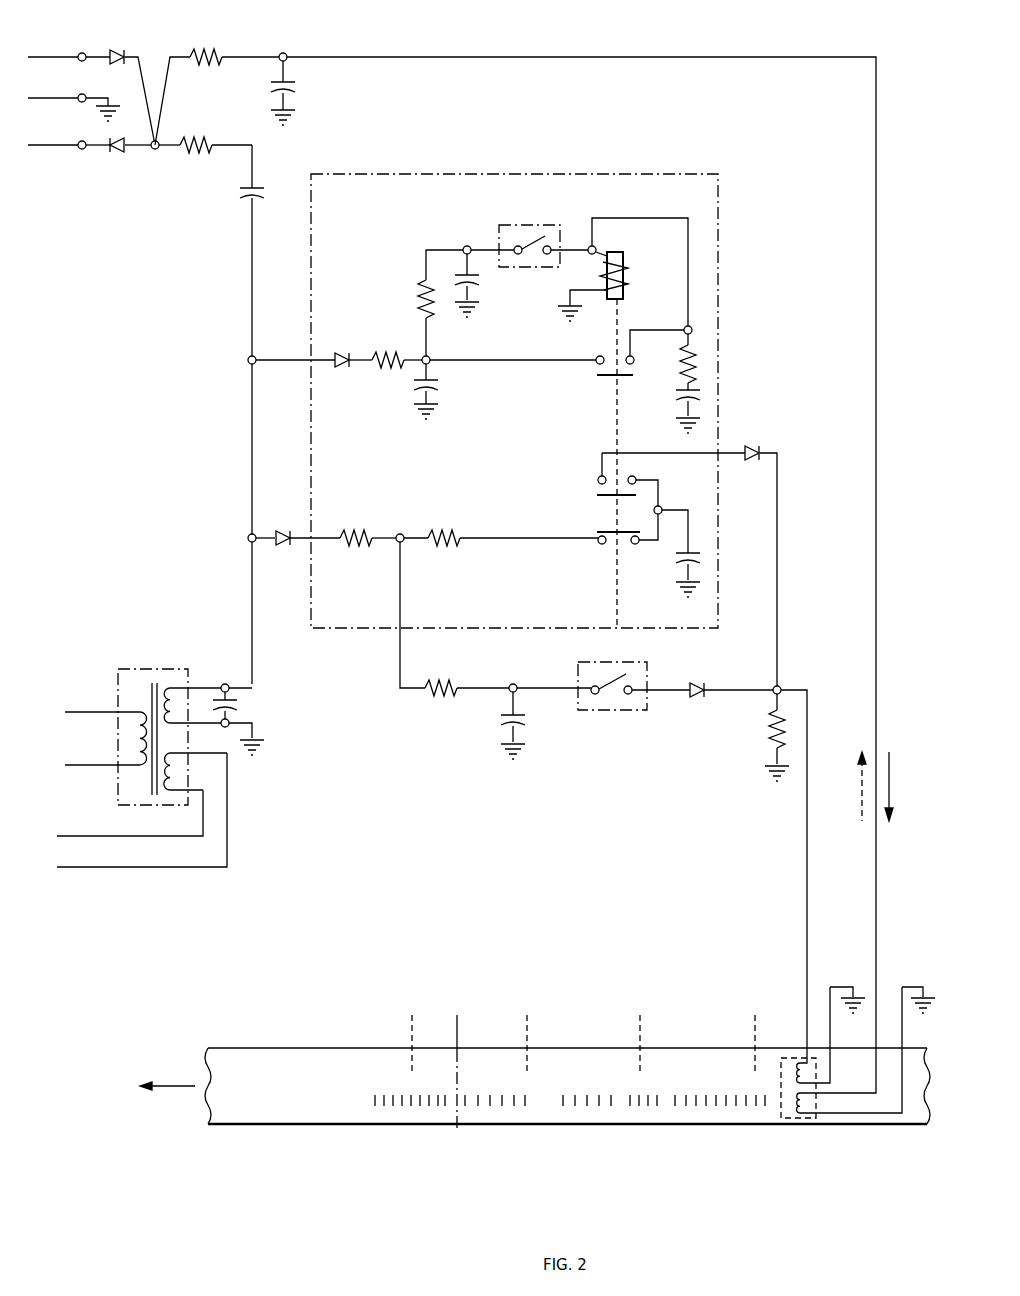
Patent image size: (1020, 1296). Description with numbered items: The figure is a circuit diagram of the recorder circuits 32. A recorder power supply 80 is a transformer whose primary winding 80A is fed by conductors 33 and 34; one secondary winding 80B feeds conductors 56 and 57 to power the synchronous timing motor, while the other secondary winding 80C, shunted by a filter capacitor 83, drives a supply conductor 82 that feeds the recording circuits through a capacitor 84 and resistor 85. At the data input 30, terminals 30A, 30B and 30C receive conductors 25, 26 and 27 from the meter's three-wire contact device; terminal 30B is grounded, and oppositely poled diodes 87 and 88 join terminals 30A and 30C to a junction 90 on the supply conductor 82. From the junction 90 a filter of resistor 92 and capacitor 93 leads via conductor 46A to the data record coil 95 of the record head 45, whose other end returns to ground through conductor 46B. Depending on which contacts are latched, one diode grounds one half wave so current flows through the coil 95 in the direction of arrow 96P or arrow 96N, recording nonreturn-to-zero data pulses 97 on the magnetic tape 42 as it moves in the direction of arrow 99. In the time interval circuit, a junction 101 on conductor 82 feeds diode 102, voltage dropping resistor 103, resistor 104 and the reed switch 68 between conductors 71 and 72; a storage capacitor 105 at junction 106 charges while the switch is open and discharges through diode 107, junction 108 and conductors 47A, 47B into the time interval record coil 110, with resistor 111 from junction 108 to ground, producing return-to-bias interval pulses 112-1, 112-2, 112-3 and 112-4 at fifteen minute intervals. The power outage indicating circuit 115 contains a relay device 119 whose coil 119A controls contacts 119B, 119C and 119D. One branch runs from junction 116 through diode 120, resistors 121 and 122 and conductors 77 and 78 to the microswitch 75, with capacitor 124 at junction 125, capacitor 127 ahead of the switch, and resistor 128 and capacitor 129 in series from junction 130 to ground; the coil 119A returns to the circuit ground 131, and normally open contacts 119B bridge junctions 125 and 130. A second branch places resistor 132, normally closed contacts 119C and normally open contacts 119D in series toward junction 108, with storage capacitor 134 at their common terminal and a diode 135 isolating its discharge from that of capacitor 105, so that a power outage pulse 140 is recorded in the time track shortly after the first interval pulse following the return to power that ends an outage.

The conductor 25 is at (52, 57).
The conductor 26 is at (57, 96).
The conductor 27 is at (56, 143).
The data input 30 is at (87, 187).
The terminal 30A is at (86, 53).
The terminal 30B is at (88, 90).
The terminal 30C is at (78, 152).
The recorder circuits 32 is at (569, 554).
The conductor 33 is at (68, 712).
The conductor 34 is at (70, 765).
The magnetic tape 42 is at (406, 1125).
The record head 45 is at (804, 1120).
The conductor 46A is at (876, 966).
The conductor 46B is at (902, 986).
The conductor 47A is at (806, 1040).
The conductor 47B is at (831, 1022).
The conductor 56 is at (76, 836).
The conductor 57 is at (57, 868).
The reed switch 68 is at (622, 710).
The conductor 71 is at (558, 686).
The conductor 72 is at (674, 686).
The microswitch 75 is at (548, 222).
The conductor 77 is at (484, 246).
The conductor 78 is at (578, 247).
The recorder power supply 80 is at (133, 668).
The primary winding 80A is at (140, 760).
The secondary winding 80B is at (170, 795).
The secondary winding 80C is at (170, 688).
The supply conductor 82 is at (250, 450).
The filter capacitor 83 is at (238, 708).
The capacitor 84 is at (240, 198).
The resistor 85 is at (200, 138).
The diode 87 is at (122, 50).
The diode 88 is at (118, 155).
The junction 90 is at (159, 150).
The resistor 92 is at (210, 50).
The capacitor 93 is at (292, 88).
The data magnetic record coil 95 is at (790, 1120).
The directional arrow 96N is at (858, 764).
The directional arrow 96P is at (889, 752).
The data pulses 97 is at (612, 1106).
The directional arrow 99 is at (186, 1088).
The junction 101 is at (248, 536).
The diode 102 is at (282, 530).
The voltage dropping resistor 103 is at (354, 530).
The resistor 104 is at (448, 674).
The storage capacitor 105 is at (505, 722).
The junction 106 is at (512, 684).
The diode 107 is at (700, 682).
The circuit junction 108 is at (781, 686).
The time interval magnetic record coil 110 is at (780, 1084).
The resistor 111 is at (770, 728).
The time interval pulse 112-1 is at (410, 1072).
The time interval pulse 112-2 is at (524, 1070).
The time interval pulse 112-3 is at (638, 1070).
The time interval pulse 112-4 is at (752, 1070).
The power outage indicating recording circuit 115 is at (515, 174).
The junction 116 is at (248, 362).
The relay device 119 is at (629, 267).
The relay coil 119A is at (625, 285).
The normally open relay contacts 119B is at (599, 356).
The normally closed relay contacts 119C is at (606, 548).
The normally open relay contacts 119D is at (598, 484).
The diode 120 is at (340, 352).
The resistor 121 is at (382, 352).
The resistor 122 is at (420, 298).
The capacitor 124 is at (438, 388).
The junction 125 is at (430, 358).
The capacitor 127 is at (478, 286).
The resistor 128 is at (700, 362).
The capacitor 129 is at (702, 396).
The junction 130 is at (692, 328).
The ground 131 is at (556, 320).
The resistor 132 is at (444, 530).
The storage capacitor 134 is at (680, 566).
The diode 135 is at (752, 446).
The recorded power outage pulse 140 is at (536, 1068).